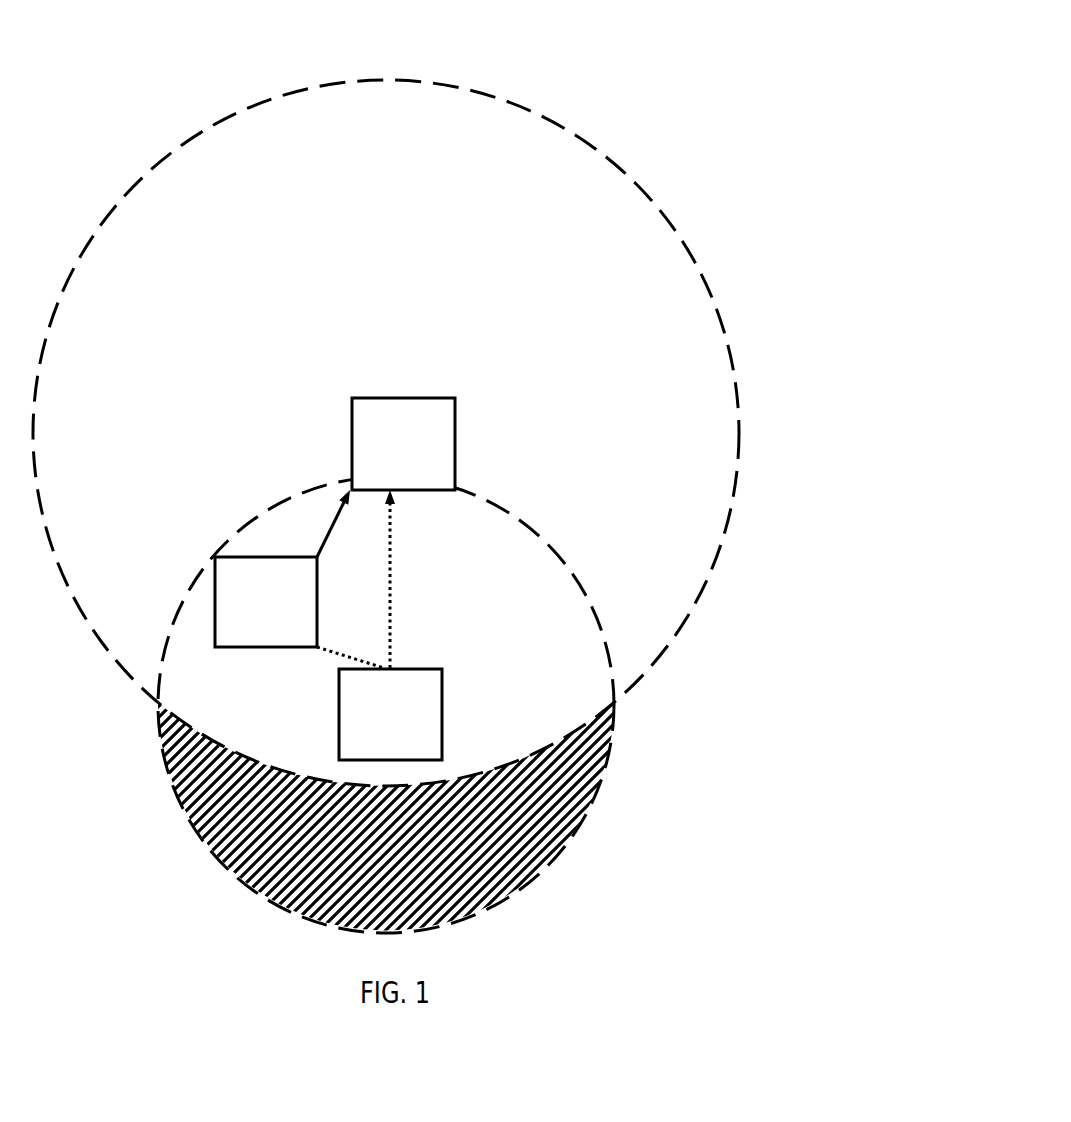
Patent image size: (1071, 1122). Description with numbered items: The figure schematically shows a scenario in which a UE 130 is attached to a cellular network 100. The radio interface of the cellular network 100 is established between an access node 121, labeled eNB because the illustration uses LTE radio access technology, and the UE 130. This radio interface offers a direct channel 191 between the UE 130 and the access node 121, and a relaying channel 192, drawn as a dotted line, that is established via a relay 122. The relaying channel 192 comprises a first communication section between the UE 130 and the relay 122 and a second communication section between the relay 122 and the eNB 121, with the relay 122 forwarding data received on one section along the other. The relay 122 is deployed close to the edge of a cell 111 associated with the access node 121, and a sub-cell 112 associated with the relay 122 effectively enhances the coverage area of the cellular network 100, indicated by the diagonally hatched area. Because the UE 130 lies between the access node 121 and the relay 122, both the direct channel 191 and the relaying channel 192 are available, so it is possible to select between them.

The cellular network 100 is at (663, 56).
The cell 111 is at (623, 176).
The sub-cell 112 is at (555, 549).
The access node 121 is at (445, 397).
The relay 122 is at (433, 669).
The UE 130 is at (276, 557).
The direct channel 191 is at (330, 534).
The relaying channel 192 is at (336, 648).